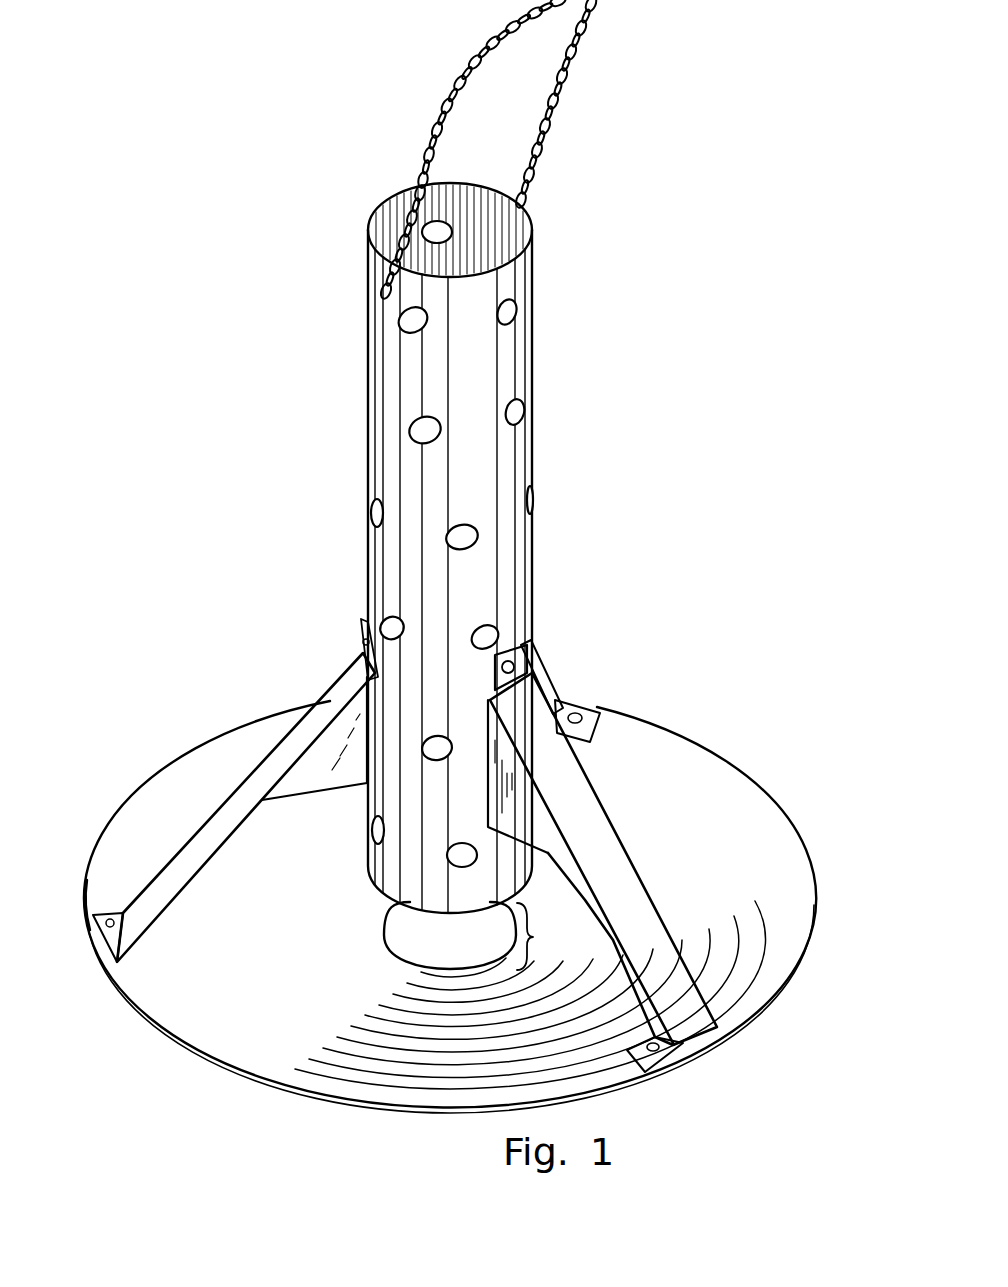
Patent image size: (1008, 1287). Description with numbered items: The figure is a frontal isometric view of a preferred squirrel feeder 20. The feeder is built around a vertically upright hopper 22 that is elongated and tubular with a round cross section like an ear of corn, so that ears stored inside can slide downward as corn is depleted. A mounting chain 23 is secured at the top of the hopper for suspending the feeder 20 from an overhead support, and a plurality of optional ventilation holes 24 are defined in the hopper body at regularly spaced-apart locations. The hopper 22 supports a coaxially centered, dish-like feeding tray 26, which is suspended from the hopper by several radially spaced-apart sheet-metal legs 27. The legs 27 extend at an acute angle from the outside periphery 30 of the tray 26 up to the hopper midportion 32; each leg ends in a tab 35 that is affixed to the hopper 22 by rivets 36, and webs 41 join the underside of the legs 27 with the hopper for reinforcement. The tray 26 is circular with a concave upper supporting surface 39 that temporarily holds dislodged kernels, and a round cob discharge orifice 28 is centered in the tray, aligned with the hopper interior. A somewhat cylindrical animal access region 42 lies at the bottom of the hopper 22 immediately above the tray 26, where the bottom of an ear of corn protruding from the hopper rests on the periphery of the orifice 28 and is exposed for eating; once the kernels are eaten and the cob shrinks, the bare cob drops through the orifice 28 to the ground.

The feeder 20 is at (258, 420).
The hopper 22 is at (530, 402).
The mounting chain 23 is at (567, 88).
The ventilation holes 24 is at (478, 536).
The feeding tray 26 is at (747, 820).
The legs 27 is at (603, 847).
The cob discharge orifice 28 is at (410, 940).
The outside periphery 30 is at (113, 843).
The hopper midportion 32 is at (363, 577).
The tab 35 is at (527, 643).
The rivets 36 is at (515, 667).
The upper supporting surface 39 is at (530, 976).
The webs 41 is at (313, 777).
The animal access region 42 is at (538, 936).